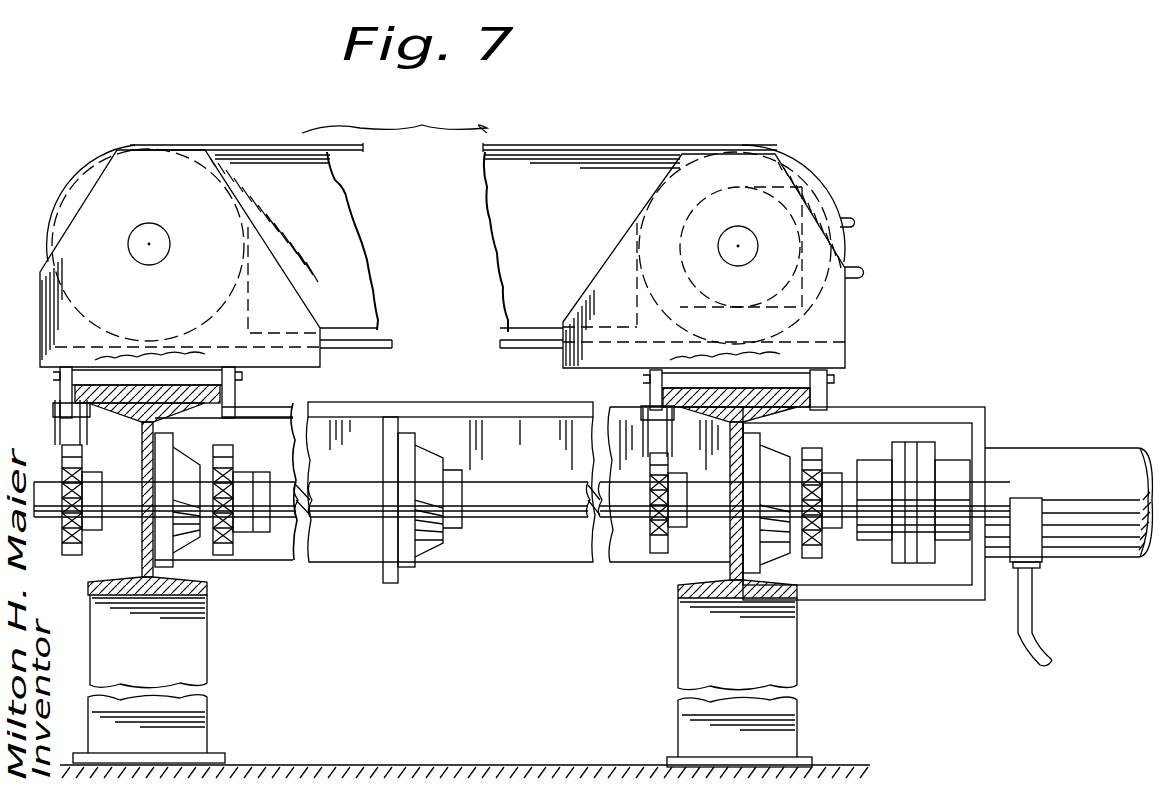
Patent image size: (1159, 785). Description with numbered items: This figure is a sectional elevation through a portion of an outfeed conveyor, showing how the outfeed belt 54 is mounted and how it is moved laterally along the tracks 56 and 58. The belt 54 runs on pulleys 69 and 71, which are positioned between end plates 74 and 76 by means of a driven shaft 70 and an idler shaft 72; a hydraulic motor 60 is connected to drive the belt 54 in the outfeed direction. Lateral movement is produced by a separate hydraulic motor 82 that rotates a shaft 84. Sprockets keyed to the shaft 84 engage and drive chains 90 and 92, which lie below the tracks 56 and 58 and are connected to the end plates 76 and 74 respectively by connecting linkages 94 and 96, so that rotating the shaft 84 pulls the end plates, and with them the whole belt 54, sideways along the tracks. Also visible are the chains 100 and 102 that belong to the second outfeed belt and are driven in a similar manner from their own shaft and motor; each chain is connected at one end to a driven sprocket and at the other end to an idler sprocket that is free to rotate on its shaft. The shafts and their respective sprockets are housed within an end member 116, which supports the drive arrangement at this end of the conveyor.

The outfeed belt 54 is at (453, 139).
The track 56 is at (190, 390).
The track 58 is at (780, 395).
The hydraulic motor 60 is at (773, 226).
The pulley 69 is at (825, 211).
The driven shaft 70 is at (733, 250).
The pulley 71 is at (78, 192).
The idler shaft 72 is at (153, 234).
The end plate 74 is at (600, 305).
The end plate 76 is at (137, 168).
The hydraulic motor 82 is at (1063, 462).
The shaft 84 is at (501, 500).
The chain 90 is at (82, 462).
The chain 92 is at (660, 445).
The connecting linkage 94 is at (70, 412).
The connecting linkage 96 is at (650, 396).
The chain 100 is at (222, 450).
The chain 102 is at (812, 455).
The end member 116 is at (402, 417).